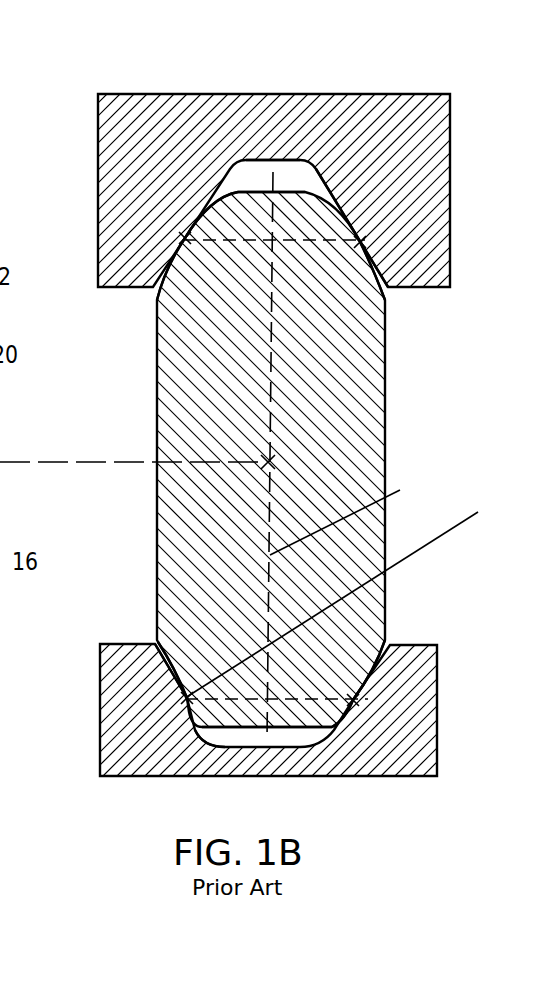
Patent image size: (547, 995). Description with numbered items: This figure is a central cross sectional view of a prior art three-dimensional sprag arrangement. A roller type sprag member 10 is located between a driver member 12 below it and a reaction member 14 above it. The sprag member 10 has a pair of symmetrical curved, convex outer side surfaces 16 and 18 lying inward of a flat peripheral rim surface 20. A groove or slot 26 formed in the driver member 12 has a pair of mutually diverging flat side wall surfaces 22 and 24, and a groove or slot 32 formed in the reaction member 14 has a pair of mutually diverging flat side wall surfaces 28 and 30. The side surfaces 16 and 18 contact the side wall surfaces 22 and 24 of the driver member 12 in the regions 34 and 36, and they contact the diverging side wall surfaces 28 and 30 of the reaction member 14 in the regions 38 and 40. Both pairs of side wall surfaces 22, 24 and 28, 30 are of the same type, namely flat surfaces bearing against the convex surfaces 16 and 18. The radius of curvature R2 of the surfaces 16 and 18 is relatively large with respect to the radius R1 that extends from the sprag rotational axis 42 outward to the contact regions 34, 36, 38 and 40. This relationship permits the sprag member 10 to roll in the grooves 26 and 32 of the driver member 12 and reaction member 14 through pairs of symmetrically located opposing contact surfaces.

The sprag member 10 is at (375, 410).
The driver member 12 is at (438, 719).
The reaction member 14 is at (450, 152).
The curved outer side surface 16 is at (159, 644).
The curved outer side surface 18 is at (378, 637).
The flat peripheral rim surface 20 is at (295, 728).
The side wall surface 22 is at (167, 665).
The side wall surface 24 is at (332, 730).
The groove 26 is at (235, 737).
The side wall surface 28 is at (210, 193).
The side wall surface 30 is at (335, 190).
The groove 32 is at (292, 173).
The contact surface region 34 is at (185, 698).
The contact surface region 36 is at (357, 703).
The contact surface region 38 is at (185, 238).
The contact surface region 40 is at (360, 242).
The sprag rotational axis 42 is at (268, 462).
The radius R1 is at (400, 490).
The radius of curvature R2 is at (412, 555).